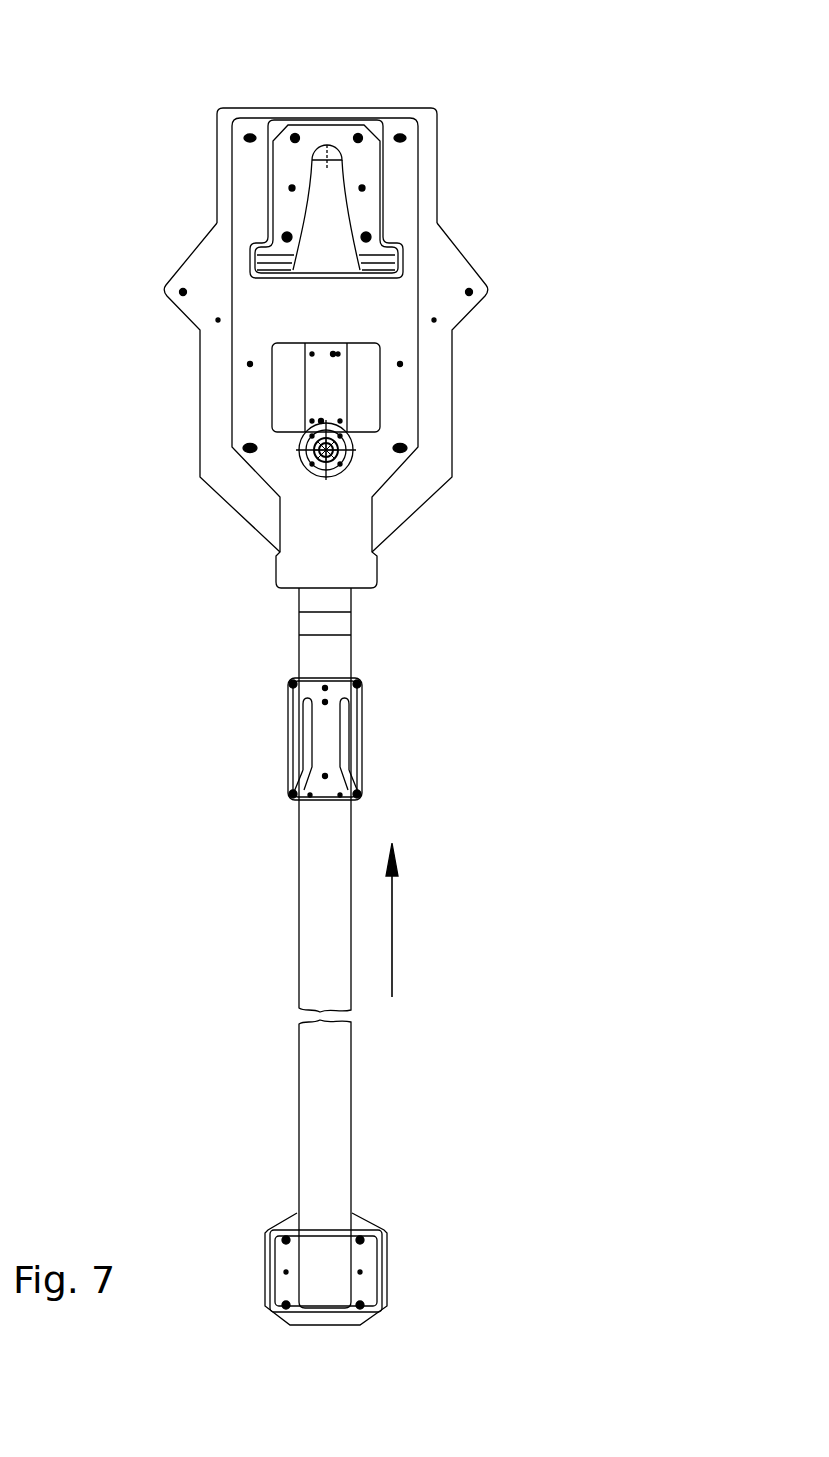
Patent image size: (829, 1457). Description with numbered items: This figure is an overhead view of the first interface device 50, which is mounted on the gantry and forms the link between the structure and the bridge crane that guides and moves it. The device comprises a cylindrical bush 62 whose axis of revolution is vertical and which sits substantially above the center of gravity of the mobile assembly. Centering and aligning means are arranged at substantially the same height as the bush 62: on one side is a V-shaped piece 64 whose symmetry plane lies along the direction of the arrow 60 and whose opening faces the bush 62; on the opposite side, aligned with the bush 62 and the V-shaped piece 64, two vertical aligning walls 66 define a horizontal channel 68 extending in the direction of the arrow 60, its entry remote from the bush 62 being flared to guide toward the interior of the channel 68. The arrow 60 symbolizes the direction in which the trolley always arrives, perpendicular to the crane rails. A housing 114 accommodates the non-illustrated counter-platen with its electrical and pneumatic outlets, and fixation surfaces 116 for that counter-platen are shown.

The first interface device 50 is at (397, 322).
The V-shaped piece 64 is at (320, 133).
The fixation surfaces 116 is at (287, 372).
The housing 114 is at (317, 407).
The cylindrical bush 62 is at (312, 470).
The arrow 60 is at (392, 925).
The horizontal channel 68 is at (323, 733).
The vertical aligning walls 66 is at (307, 763).